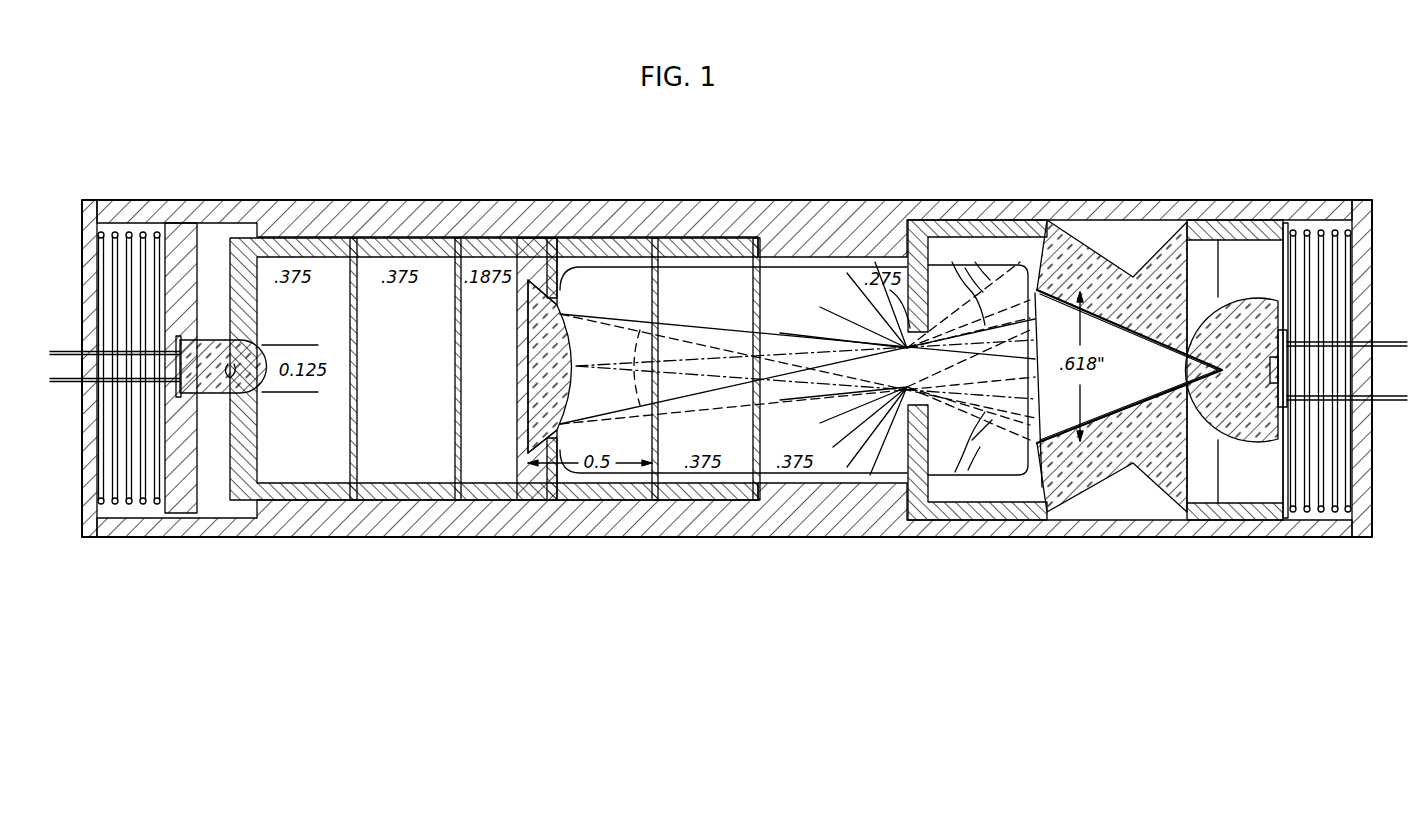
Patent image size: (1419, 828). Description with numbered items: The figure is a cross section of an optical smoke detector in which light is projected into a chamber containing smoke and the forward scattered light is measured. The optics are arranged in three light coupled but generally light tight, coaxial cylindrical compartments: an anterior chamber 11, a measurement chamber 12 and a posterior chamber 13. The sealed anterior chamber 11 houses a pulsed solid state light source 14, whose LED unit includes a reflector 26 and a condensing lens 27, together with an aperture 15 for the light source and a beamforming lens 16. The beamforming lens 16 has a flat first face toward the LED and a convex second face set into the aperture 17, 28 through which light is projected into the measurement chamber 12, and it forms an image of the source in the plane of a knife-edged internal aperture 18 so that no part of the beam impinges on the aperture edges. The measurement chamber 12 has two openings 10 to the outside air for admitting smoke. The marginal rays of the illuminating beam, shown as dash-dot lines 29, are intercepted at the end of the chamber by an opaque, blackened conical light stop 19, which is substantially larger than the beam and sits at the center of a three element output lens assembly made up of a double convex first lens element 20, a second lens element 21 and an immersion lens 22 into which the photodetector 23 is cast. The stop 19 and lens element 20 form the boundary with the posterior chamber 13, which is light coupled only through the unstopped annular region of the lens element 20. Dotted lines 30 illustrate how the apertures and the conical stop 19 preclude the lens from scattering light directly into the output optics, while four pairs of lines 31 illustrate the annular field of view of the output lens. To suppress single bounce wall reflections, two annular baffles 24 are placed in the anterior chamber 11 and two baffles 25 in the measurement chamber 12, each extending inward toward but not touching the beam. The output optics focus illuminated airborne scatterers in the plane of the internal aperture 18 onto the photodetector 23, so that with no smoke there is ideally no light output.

The openings 10 is at (823, 470).
The anterior chamber 11 is at (527, 182).
The measurement chamber 12 is at (1037, 182).
The posterior chamber 13 is at (1377, 182).
The light source 14 is at (243, 378).
The aperture 15 is at (250, 390).
The beamforming lens 16 is at (528, 342).
The aperture 17 is at (558, 306).
The internal aperture 18 is at (910, 407).
The light stop 19 is at (1110, 470).
The first lens element 20 is at (1070, 497).
The second lens element 21 is at (1165, 503).
The immersion lens 22 is at (1253, 440).
The photodetector 23 is at (1272, 370).
The baffles 24 is at (360, 468).
The baffles 25 is at (667, 473).
The reflector 26 is at (230, 352).
The condensing lens 27 is at (262, 352).
The aperture 28 is at (528, 433).
The marginal rays 29 is at (727, 392).
The dotted lines 30 is at (624, 367).
The pairs of lines 31 is at (963, 356).